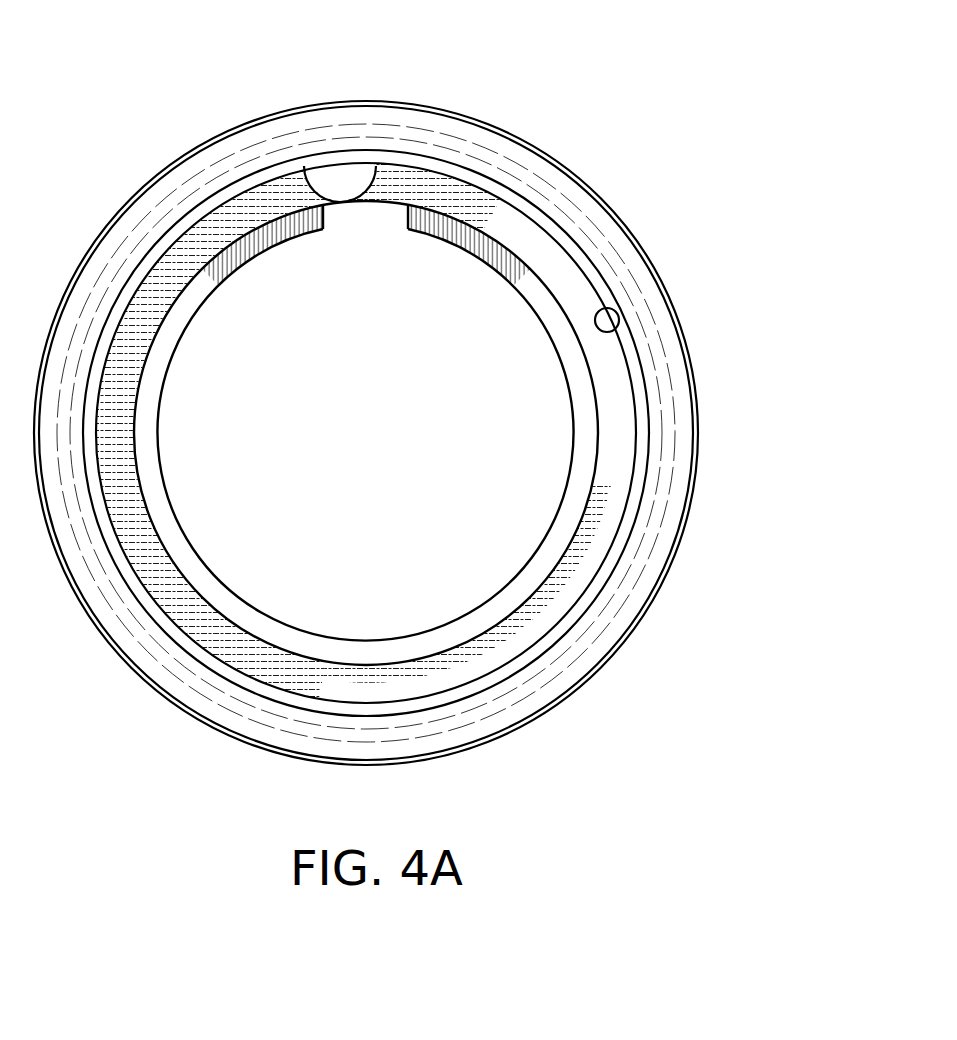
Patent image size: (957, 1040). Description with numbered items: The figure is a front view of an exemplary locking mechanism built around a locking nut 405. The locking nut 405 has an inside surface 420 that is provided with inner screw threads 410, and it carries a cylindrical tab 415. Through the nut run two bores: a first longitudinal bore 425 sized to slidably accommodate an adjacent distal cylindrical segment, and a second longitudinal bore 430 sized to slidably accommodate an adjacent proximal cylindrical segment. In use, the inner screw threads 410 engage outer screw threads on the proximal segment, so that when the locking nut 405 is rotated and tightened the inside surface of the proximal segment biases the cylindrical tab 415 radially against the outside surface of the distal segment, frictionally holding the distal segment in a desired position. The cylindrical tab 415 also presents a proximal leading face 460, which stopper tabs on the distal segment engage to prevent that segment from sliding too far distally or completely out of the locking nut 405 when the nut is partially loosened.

The locking nut 405 is at (696, 176).
The inner screw threads 410 is at (376, 166).
The cylindrical tab 415 is at (417, 260).
The inside surface 420 is at (619, 322).
The first longitudinal bore 425 is at (235, 358).
The second longitudinal bore 430 is at (640, 574).
The proximal leading face 460 is at (600, 413).